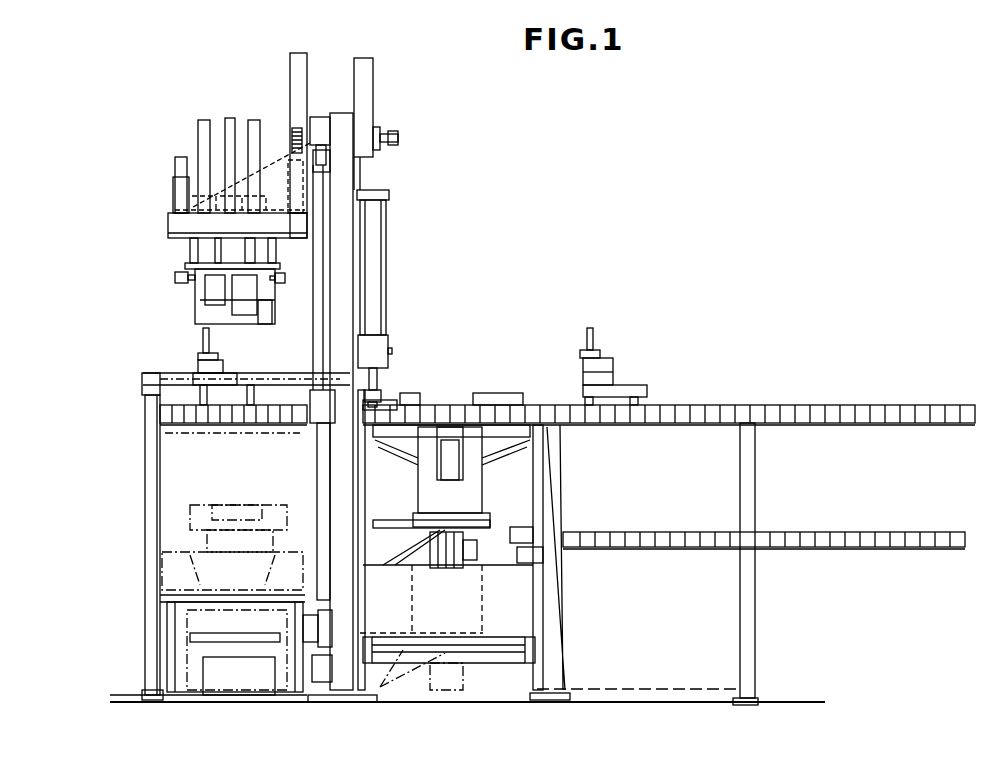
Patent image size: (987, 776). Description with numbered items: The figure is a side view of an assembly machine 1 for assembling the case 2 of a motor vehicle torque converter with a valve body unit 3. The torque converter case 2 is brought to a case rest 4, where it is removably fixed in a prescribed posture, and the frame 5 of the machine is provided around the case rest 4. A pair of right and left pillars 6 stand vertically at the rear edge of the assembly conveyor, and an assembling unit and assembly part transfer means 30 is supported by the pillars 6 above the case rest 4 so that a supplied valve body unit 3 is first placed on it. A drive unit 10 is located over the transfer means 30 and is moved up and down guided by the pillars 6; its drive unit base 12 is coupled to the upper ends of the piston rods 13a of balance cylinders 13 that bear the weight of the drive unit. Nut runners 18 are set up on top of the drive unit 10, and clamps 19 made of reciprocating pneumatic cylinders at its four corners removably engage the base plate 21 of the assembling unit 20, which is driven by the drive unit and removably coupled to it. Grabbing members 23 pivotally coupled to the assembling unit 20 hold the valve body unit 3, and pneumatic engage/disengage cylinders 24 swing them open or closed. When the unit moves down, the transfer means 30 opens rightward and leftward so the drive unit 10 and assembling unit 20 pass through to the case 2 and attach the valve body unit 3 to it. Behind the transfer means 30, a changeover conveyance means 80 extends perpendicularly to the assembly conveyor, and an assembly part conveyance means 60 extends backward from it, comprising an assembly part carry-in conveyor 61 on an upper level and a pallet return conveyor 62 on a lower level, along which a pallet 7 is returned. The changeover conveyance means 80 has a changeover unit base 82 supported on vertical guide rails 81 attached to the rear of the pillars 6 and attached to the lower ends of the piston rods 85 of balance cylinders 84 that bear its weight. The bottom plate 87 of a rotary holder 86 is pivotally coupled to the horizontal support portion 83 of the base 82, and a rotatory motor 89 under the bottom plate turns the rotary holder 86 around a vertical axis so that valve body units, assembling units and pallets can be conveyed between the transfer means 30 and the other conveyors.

The assembly machine 1 is at (585, 160).
The torque converter case 2 is at (202, 516).
The valve body unit 3 is at (228, 372).
The case rest 4 is at (160, 570).
The frame 5 is at (129, 484).
The pillars 6 is at (343, 125).
The pallet 7 is at (270, 408).
The drive unit 10 is at (210, 179).
The drive unit base 12 is at (300, 222).
The balance cylinders 13 is at (322, 507).
The piston rods 13a is at (321, 322).
The nut runners 18 is at (250, 128).
The clamps 19 is at (180, 165).
The assembling unit 20 is at (214, 305).
The base plate 21 is at (168, 240).
The grabbing members 23 is at (267, 323).
The engage/disengage cylinders 24 is at (175, 278).
The assembling unit and assembly part transfer means 30 is at (157, 413).
The assembly part conveyance means 60 is at (669, 494).
The assembly part carry-in conveyor 61 is at (710, 415).
The pallet return conveyor 62 is at (613, 537).
The changeover conveyance means 80 is at (450, 489).
The guide rails 81 is at (365, 595).
The changeover unit base 82 is at (371, 480).
The horizontal support portion 83 is at (390, 522).
The balance cylinders 84 is at (371, 260).
The piston rods 85 is at (385, 367).
The rotary holder 86 is at (484, 480).
The bottom plate 87 is at (488, 515).
The rotatory motor 89 is at (463, 548).